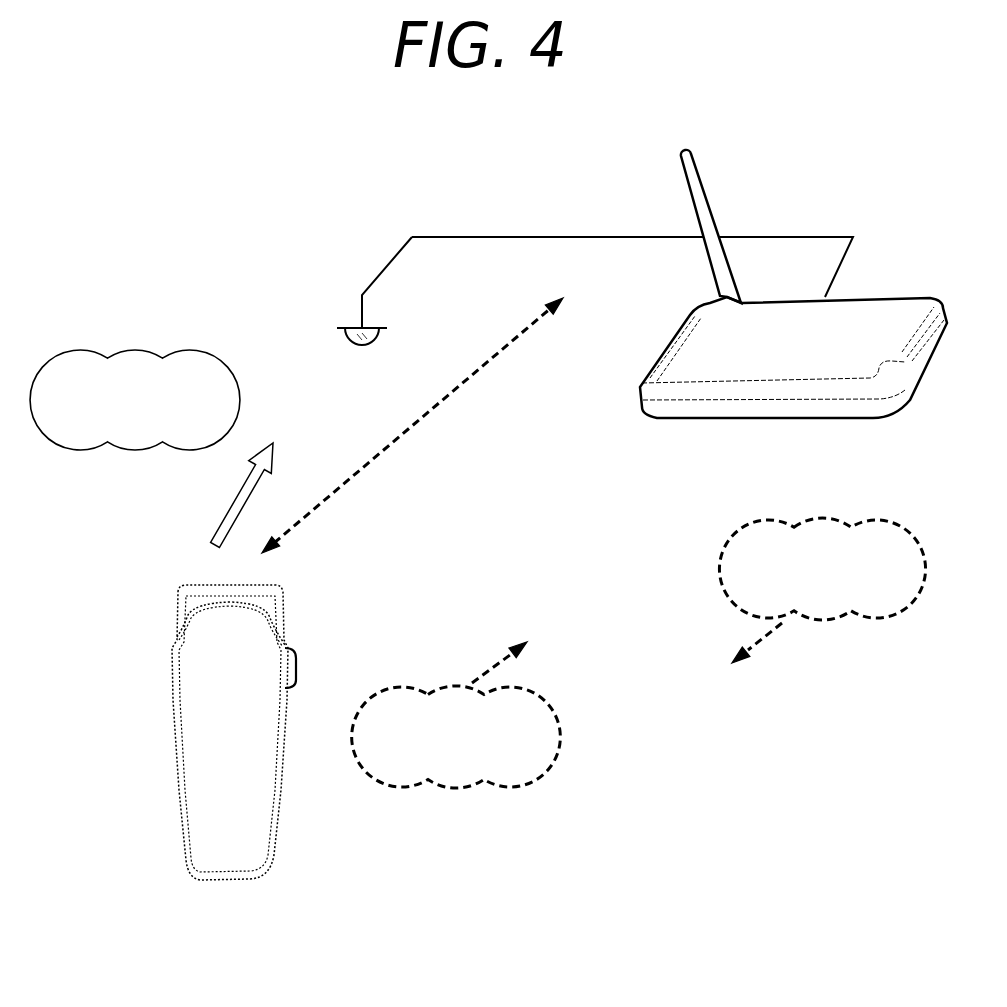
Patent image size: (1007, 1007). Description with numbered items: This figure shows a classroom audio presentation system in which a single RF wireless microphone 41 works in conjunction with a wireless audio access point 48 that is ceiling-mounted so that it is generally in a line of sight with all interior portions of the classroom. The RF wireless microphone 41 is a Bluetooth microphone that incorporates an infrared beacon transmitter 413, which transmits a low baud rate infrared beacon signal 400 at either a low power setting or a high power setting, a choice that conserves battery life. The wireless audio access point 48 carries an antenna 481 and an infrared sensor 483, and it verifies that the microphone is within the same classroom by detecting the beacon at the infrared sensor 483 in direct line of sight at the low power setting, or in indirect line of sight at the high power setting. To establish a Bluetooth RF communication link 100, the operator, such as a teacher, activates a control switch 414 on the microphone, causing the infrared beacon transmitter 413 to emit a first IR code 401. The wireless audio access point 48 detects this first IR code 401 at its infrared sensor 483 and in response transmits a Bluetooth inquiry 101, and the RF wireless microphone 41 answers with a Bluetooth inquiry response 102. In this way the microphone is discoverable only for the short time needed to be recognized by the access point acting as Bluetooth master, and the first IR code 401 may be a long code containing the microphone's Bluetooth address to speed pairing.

The RF wireless microphone 41 is at (230, 733).
The wireless audio access point 48 is at (810, 418).
The Bluetooth RF communication link 100 is at (491, 363).
The Bluetooth inquiry 101 is at (752, 524).
The Bluetooth inquiry response 102 is at (527, 779).
The infrared beacon signal 400 is at (237, 497).
The first IR code 401 is at (135, 350).
The infrared beacon transmitter 413 is at (178, 602).
The control switch 414 is at (296, 668).
The antenna 481 is at (681, 163).
The infrared sensor 483 is at (337, 328).